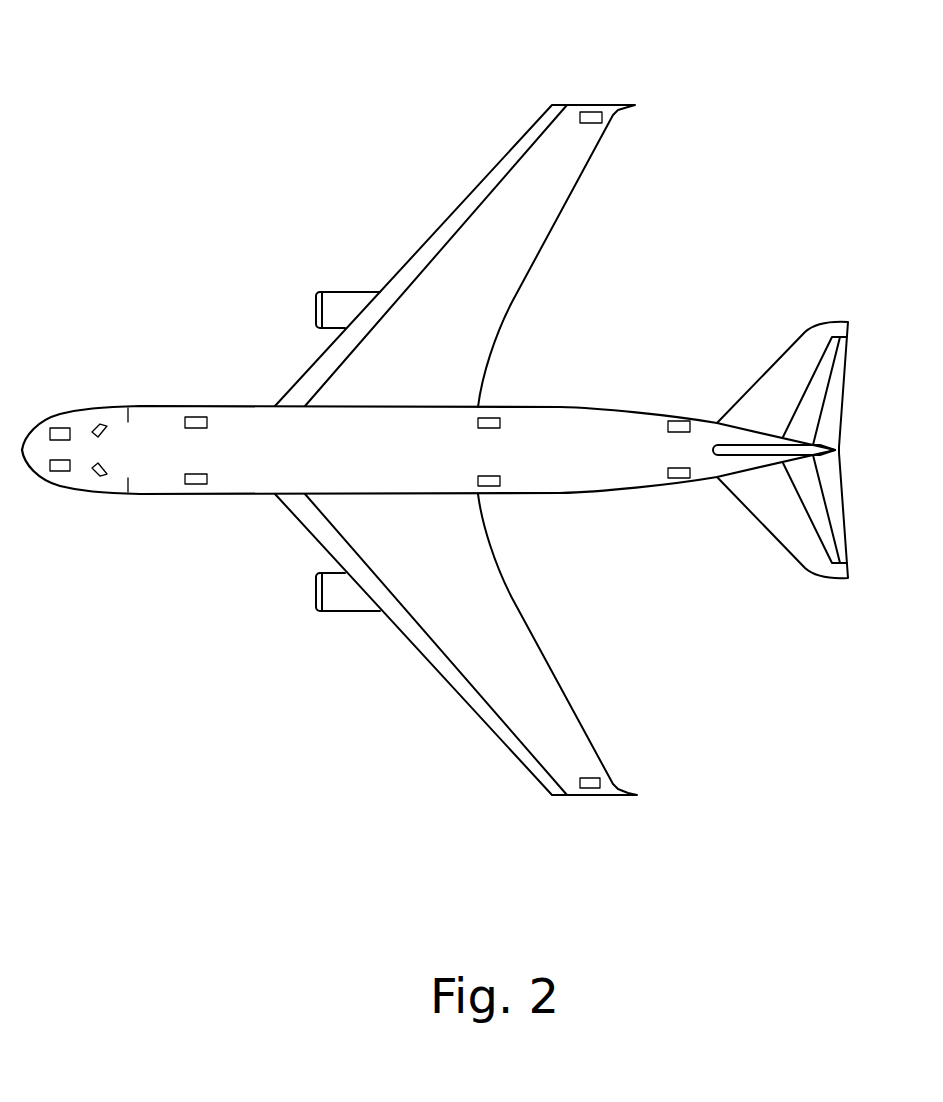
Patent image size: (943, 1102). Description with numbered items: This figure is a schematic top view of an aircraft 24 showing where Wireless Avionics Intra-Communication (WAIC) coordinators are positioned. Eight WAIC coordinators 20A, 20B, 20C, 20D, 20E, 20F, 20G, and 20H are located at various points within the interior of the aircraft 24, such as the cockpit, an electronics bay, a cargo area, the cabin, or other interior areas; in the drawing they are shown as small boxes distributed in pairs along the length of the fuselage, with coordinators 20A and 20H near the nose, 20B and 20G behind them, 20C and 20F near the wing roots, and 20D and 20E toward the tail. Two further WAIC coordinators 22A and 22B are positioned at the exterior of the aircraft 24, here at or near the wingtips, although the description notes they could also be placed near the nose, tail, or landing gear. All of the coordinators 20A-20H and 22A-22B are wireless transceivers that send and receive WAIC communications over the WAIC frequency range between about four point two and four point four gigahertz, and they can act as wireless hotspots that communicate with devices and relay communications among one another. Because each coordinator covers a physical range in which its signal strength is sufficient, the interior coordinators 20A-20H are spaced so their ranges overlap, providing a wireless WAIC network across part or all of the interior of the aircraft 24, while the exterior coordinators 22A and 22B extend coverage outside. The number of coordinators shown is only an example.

The WAIC coordinator 20A is at (60, 430).
The WAIC coordinator 20B is at (193, 419).
The WAIC coordinator 20C is at (490, 419).
The WAIC coordinator 20D is at (680, 424).
The WAIC coordinator 20E is at (678, 475).
The WAIC coordinator 20F is at (490, 486).
The WAIC coordinator 20G is at (197, 483).
The WAIC coordinator 20H is at (62, 469).
The WAIC coordinator 22A is at (590, 113).
The WAIC coordinator 22B is at (592, 778).
The aircraft 24 is at (458, 208).